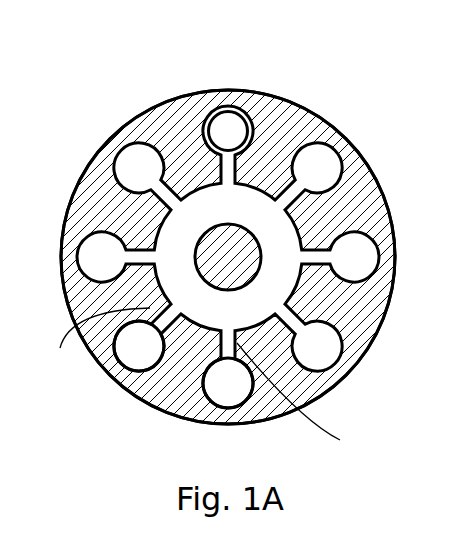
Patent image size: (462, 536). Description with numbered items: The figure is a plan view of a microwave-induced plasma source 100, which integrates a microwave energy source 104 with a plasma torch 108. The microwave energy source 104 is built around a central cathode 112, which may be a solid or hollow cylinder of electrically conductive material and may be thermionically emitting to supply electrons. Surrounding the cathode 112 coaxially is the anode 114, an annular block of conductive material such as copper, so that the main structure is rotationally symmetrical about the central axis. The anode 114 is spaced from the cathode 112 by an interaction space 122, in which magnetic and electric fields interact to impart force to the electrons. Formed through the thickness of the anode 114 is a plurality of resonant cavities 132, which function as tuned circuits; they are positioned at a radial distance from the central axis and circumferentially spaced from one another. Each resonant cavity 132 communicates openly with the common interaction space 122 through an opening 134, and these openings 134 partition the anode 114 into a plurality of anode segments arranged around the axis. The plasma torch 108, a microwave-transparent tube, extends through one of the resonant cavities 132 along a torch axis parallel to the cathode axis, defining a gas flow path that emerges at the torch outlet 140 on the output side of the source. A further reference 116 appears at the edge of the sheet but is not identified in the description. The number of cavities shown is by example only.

The microwave-induced plasma source 100 is at (117, 86).
The microwave energy source 104 is at (81, 155).
The plasma torch 108 is at (262, 117).
The cathode 112 is at (252, 263).
The anode 114 is at (354, 198).
The rotor body portion 116 is at (461, 152).
The interaction space 122 is at (285, 289).
The resonant cavities 132 is at (224, 383).
The openings 134 is at (213, 378).
The torch outlet 140 is at (451, 242).